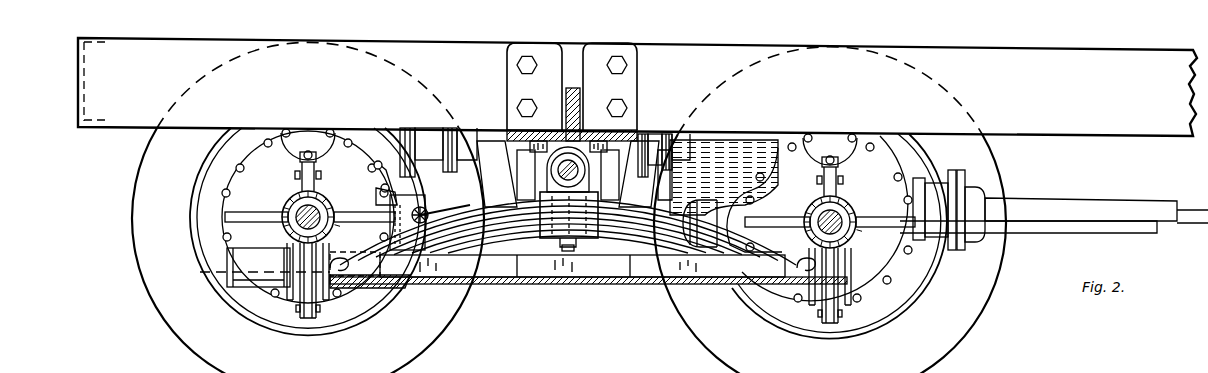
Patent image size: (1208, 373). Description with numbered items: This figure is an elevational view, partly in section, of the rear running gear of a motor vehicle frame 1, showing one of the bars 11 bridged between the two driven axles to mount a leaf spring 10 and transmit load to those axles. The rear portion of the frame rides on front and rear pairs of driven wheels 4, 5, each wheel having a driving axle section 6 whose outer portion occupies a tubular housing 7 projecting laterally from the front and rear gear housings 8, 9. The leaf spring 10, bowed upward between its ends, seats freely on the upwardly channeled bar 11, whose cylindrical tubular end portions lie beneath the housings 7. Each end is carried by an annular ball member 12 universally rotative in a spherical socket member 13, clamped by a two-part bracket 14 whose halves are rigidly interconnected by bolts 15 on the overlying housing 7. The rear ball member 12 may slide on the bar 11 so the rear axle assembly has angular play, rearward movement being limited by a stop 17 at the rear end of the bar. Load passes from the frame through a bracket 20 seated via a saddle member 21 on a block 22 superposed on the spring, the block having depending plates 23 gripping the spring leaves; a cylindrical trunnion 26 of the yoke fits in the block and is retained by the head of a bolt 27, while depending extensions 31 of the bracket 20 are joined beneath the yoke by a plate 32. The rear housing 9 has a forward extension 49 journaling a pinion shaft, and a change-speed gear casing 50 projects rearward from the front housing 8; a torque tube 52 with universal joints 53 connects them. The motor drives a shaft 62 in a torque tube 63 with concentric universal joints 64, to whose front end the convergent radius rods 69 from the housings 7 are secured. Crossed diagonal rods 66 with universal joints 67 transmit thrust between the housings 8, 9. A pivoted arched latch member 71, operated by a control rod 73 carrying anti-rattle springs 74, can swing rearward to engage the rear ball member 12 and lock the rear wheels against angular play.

The motor vehicle frame 1 is at (726, 50).
The front pair of driven wheels 4 is at (677, 321).
The rear pair of driven wheels 5 is at (448, 306).
The driving axle section 6 is at (300, 211).
The tubular housing 7 is at (285, 223).
The front gear housing 8 is at (897, 273).
The rear gear housing 9 is at (238, 233).
The leaf spring 10 is at (631, 244).
The bar 11 is at (536, 281).
The annular ball member 12 is at (333, 252).
The spherical socket member 13 is at (298, 301).
The bracket 14 is at (331, 199).
The bolt 15 is at (322, 178).
The stop 17 is at (226, 266).
The bracket 20 is at (592, 58).
The saddle member 21 is at (497, 174).
The block 22 is at (631, 174).
The depending plate 23 is at (539, 237).
The cylindrical trunnion 26 is at (577, 152).
The bolt 27 is at (548, 176).
The depending extension 31 is at (518, 182).
The plate 32 is at (620, 196).
The forward extension 49 is at (400, 136).
The change-speed gear casing 50 is at (723, 163).
The torque tube 52 is at (488, 122).
The universal joint 53 is at (460, 136).
The shaft 62 is at (1190, 210).
The torque tube 63 is at (1127, 203).
The concentric universal joint 64 is at (975, 187).
The diagonal rod 66 is at (673, 207).
The joint 67 is at (765, 150).
The radius rod 69 is at (1040, 234).
The latch member 71 is at (380, 164).
The control rod 73 is at (440, 209).
The spring 74 is at (428, 205).